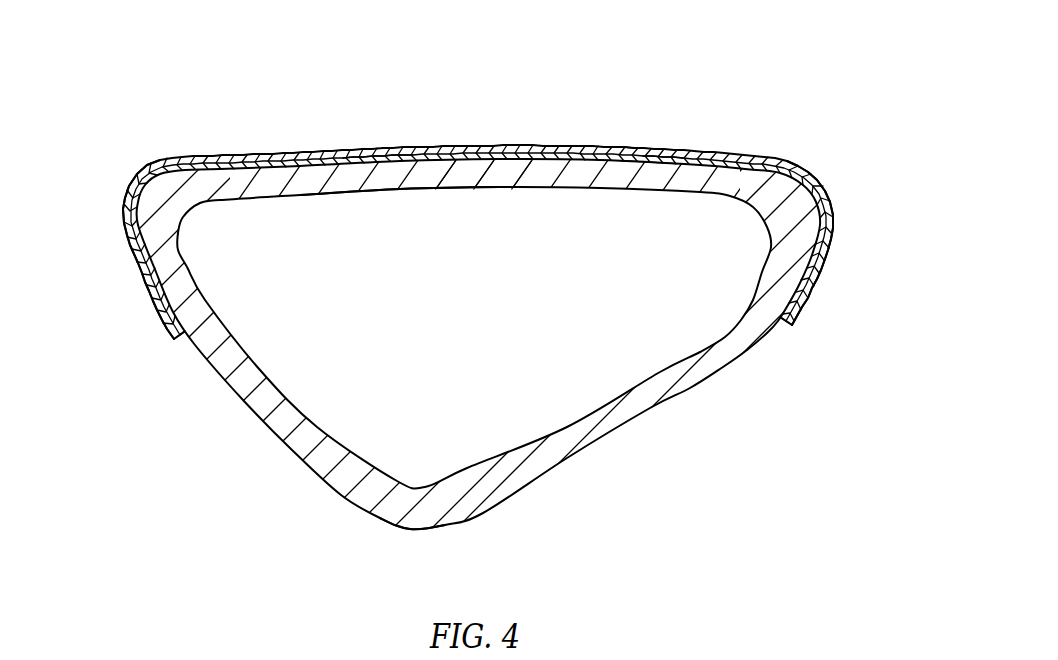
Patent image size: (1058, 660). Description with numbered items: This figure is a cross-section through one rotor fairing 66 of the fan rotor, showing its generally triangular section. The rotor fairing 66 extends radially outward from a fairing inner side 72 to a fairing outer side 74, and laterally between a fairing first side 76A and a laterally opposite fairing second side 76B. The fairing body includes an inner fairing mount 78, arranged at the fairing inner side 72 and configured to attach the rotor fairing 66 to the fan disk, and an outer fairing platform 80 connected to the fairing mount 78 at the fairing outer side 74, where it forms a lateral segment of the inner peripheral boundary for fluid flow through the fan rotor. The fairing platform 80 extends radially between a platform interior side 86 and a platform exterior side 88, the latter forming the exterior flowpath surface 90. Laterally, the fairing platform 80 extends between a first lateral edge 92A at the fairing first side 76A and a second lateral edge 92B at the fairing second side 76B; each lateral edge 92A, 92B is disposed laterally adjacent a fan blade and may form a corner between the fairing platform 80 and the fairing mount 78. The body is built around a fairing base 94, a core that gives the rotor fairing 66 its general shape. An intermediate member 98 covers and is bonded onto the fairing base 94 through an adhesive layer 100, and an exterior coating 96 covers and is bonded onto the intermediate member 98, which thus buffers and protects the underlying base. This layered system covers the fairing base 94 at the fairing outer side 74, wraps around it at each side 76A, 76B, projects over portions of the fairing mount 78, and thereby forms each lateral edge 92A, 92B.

The rotor fairing 66 is at (804, 94).
The fairing inner side 72 is at (410, 531).
The fairing outer side 74 is at (343, 148).
The fairing first side 76A is at (107, 225).
The fairing second side 76B is at (848, 219).
The fairing mount 78 is at (265, 429).
The fairing platform 80 is at (497, 127).
The platform interior side 86 is at (366, 193).
The platform exterior side 88 is at (389, 109).
The exterior flowpath surface 90 is at (378, 148).
The first lateral edge 92A is at (121, 207).
The second lateral edge 92B is at (833, 211).
The fairing base 94 is at (497, 171).
The exterior coating 96 is at (627, 153).
The intermediate member 98 is at (670, 158).
The adhesive layer 100 is at (648, 168).